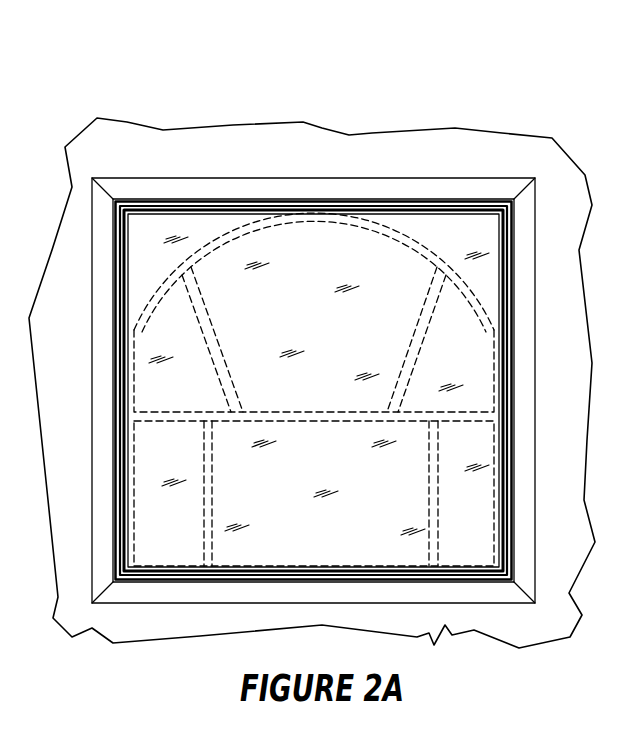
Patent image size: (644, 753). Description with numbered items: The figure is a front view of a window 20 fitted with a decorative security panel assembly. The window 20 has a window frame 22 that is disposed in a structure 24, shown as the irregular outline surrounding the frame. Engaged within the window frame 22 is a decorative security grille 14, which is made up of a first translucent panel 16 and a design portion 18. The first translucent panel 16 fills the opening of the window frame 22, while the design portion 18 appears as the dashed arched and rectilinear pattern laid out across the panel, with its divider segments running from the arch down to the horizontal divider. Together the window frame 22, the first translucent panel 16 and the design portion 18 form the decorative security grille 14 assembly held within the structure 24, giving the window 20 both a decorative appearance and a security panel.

The decorative security grille 14 is at (210, 241).
The first translucent panel 16 is at (452, 231).
The design portion 18 is at (222, 368).
The window 20 is at (541, 97).
The window frame 22 is at (522, 394).
The structure 24 is at (106, 139).